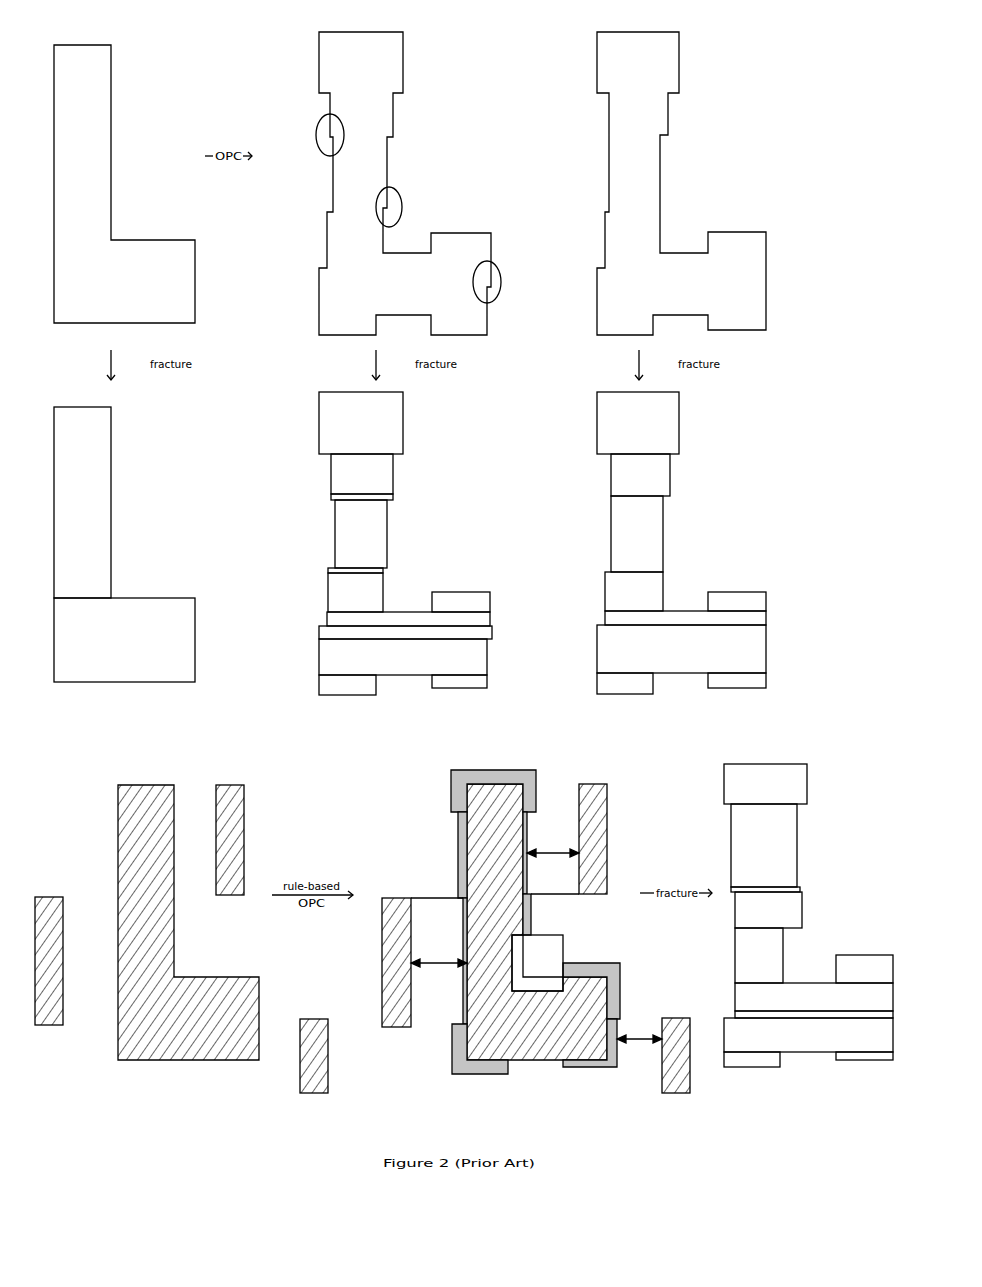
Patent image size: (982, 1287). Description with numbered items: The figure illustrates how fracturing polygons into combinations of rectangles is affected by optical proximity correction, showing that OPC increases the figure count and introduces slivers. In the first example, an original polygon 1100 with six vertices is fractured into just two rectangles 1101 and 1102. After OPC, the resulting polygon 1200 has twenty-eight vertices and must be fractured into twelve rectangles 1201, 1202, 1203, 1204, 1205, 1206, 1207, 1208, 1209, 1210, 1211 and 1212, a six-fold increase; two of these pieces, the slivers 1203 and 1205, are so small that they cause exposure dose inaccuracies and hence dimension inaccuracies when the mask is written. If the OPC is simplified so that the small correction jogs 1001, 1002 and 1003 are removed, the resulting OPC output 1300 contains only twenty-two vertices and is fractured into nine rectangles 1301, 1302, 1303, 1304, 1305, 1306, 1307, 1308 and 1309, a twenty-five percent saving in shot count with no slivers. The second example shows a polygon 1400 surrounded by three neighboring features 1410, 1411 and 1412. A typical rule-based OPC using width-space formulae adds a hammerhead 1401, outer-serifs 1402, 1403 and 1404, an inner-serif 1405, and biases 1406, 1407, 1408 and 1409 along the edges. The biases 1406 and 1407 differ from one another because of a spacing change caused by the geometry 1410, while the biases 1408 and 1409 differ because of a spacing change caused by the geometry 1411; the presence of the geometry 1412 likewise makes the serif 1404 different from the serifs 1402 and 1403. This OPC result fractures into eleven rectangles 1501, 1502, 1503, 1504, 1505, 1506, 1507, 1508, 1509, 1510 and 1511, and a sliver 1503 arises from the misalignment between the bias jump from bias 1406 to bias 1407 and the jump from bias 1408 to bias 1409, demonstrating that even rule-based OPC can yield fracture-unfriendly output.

The correction jog 1001 is at (294, 126).
The correction jog 1002 is at (402, 198).
The correction jog 1003 is at (501, 287).
The original polygon 1100 is at (124, 184).
The rectangle 1101 is at (82, 502).
The rectangle 1102 is at (124, 640).
The resulting polygon 1200 is at (405, 183).
The rectangle 1201 is at (361, 423).
The rectangle 1202 is at (362, 474).
The sliver 1203 is at (362, 497).
The rectangle 1204 is at (361, 534).
The sliver 1205 is at (355, 570).
The rectangle 1206 is at (355, 592).
The rectangle 1207 is at (461, 602).
The rectangle 1208 is at (408, 619).
The rectangle 1209 is at (405, 632).
The rectangle 1210 is at (403, 657).
The rectangle 1211 is at (347, 685).
The rectangle 1212 is at (459, 681).
The OPC output 1300 is at (681, 183).
The rectangle 1301 is at (638, 423).
The rectangle 1302 is at (640, 475).
The rectangle 1303 is at (637, 534).
The rectangle 1304 is at (634, 591).
The rectangle 1305 is at (737, 601).
The rectangle 1306 is at (685, 618).
The rectangle 1307 is at (681, 649).
The rectangle 1308 is at (625, 683).
The rectangle 1309 is at (737, 680).
The polygon 1400 is at (362, 922).
The hammerhead 1401 is at (493, 791).
The outer-serif 1402 is at (480, 1049).
The outer-serif 1403 is at (591, 991).
The outer-serif 1404 is at (590, 1045).
The inner-serif 1405 is at (537, 963).
The bias 1406 is at (458, 840).
The bias 1407 is at (463, 985).
The bias 1408 is at (527, 828).
The bias 1409 is at (531, 928).
The neighboring feature 1410 is at (219, 962).
The neighboring feature 1411 is at (412, 839).
The neighboring feature 1412 is at (496, 1055).
The rectangle 1501 is at (765, 784).
The rectangle 1502 is at (764, 845).
The sliver 1503 is at (765, 888).
The rectangle 1504 is at (768, 910).
The rectangle 1505 is at (759, 955).
The rectangle 1506 is at (864, 969).
The rectangle 1507 is at (814, 997).
The rectangle 1508 is at (814, 1015).
The rectangle 1509 is at (808, 1035).
The rectangle 1510 is at (752, 1059).
The rectangle 1511 is at (864, 1055).